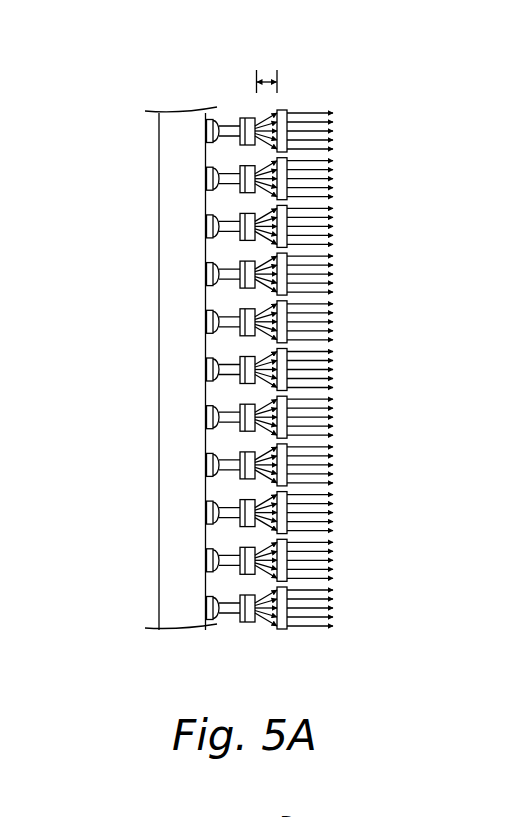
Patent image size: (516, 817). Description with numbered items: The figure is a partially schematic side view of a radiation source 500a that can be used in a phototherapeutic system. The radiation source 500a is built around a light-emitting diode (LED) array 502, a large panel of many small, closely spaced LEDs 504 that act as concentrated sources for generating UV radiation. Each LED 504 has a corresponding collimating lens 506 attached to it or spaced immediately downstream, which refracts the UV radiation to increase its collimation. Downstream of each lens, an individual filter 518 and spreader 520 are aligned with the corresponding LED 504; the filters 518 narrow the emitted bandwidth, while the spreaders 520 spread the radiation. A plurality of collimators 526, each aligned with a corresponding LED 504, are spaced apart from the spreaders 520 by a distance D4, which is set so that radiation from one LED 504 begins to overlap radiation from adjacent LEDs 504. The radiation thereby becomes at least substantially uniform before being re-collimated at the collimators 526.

The radiation source 500a is at (202, 367).
The light-emitting diode (LED) array 502 is at (159, 271).
The LED 504 is at (211, 619).
The collimating lens 506 is at (213, 610).
The filter 518 is at (242, 596).
The spreader 520 is at (252, 621).
The collimator 526 is at (282, 628).
The distance D4 is at (271, 80).